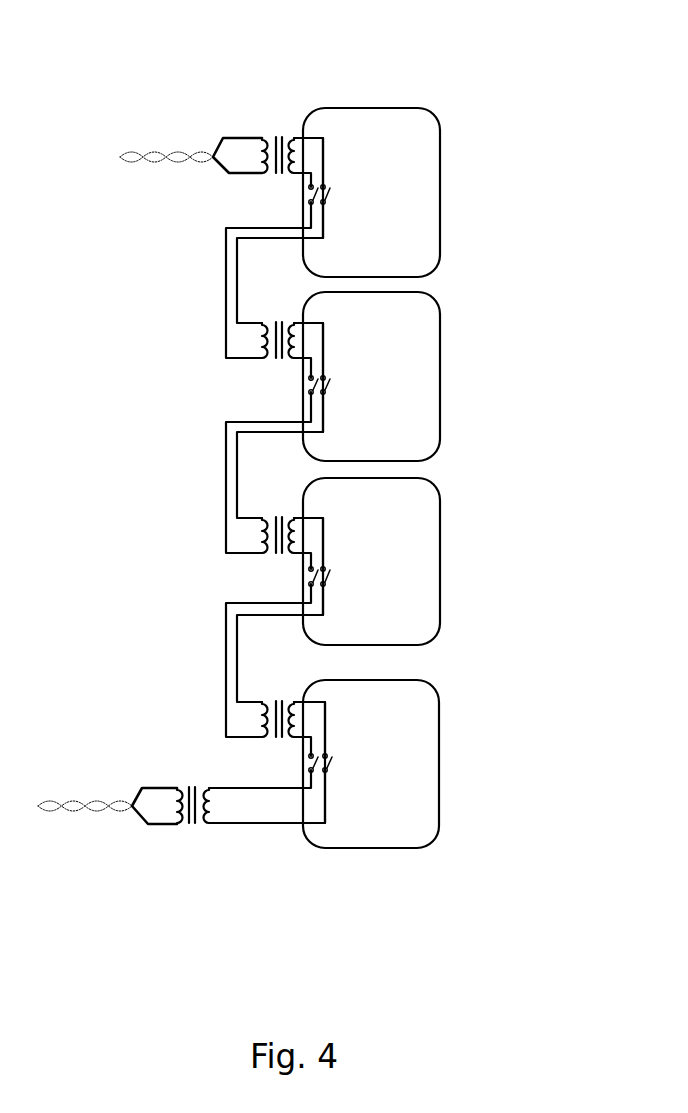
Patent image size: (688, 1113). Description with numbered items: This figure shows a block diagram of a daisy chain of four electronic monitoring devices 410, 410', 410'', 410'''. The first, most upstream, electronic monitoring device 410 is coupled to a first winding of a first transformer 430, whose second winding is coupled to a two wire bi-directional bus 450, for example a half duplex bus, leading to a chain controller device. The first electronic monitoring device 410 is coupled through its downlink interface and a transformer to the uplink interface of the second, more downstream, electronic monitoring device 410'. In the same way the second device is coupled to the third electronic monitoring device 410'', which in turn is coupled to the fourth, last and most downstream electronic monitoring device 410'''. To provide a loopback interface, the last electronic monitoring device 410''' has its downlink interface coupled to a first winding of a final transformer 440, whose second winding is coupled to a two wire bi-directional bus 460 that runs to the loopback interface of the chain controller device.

The electronic monitoring device 410 is at (396, 233).
The electronic monitoring device 410' is at (399, 422).
The electronic monitoring device 410'' is at (402, 607).
The electronic monitoring device 410''' is at (393, 764).
The first transformer 430 is at (272, 137).
The final transformer 440 is at (193, 820).
The two wire bi-directional bus 450 is at (163, 160).
The two wire bi-directional bus 460 is at (103, 812).